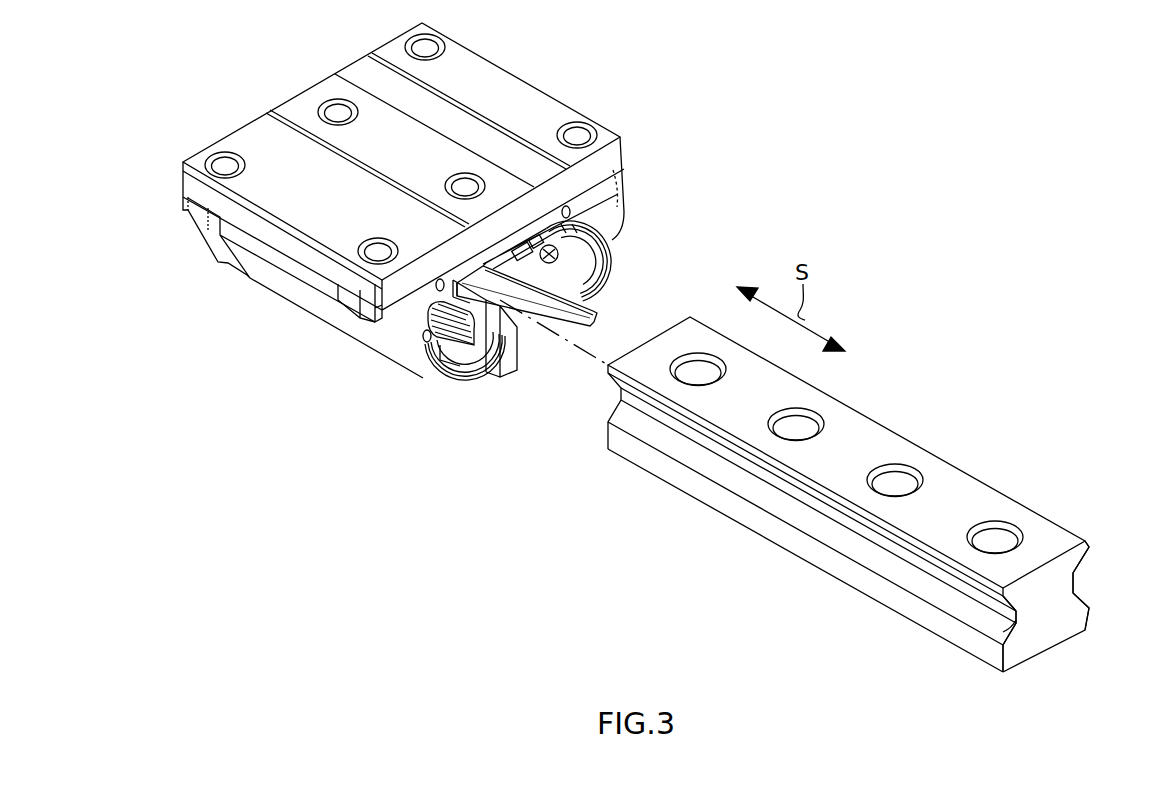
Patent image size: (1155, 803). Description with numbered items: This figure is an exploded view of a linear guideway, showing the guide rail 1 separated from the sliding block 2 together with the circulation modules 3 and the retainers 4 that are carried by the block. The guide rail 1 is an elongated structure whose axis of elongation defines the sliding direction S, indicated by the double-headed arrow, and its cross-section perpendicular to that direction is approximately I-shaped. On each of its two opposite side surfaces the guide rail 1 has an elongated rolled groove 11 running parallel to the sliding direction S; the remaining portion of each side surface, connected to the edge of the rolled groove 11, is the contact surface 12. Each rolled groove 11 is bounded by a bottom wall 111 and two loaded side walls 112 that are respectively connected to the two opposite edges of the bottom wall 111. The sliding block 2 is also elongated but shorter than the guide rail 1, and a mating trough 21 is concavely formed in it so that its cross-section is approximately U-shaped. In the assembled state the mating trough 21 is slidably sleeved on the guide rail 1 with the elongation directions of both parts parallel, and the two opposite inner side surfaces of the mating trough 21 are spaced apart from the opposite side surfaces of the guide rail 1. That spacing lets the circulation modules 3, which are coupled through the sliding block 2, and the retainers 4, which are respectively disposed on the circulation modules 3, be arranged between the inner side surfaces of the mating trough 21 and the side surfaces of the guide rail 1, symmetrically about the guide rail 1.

The guide rail 1 is at (884, 432).
The rolled groove 11 is at (1078, 580).
The bottom wall 111 is at (1008, 616).
The loaded side wall 112 is at (932, 610).
The contact surface 12 is at (1088, 548).
The sliding block 2 is at (547, 90).
The mating trough 21 is at (480, 276).
The circulation module 3 is at (612, 244).
The retainer 4 is at (598, 317).